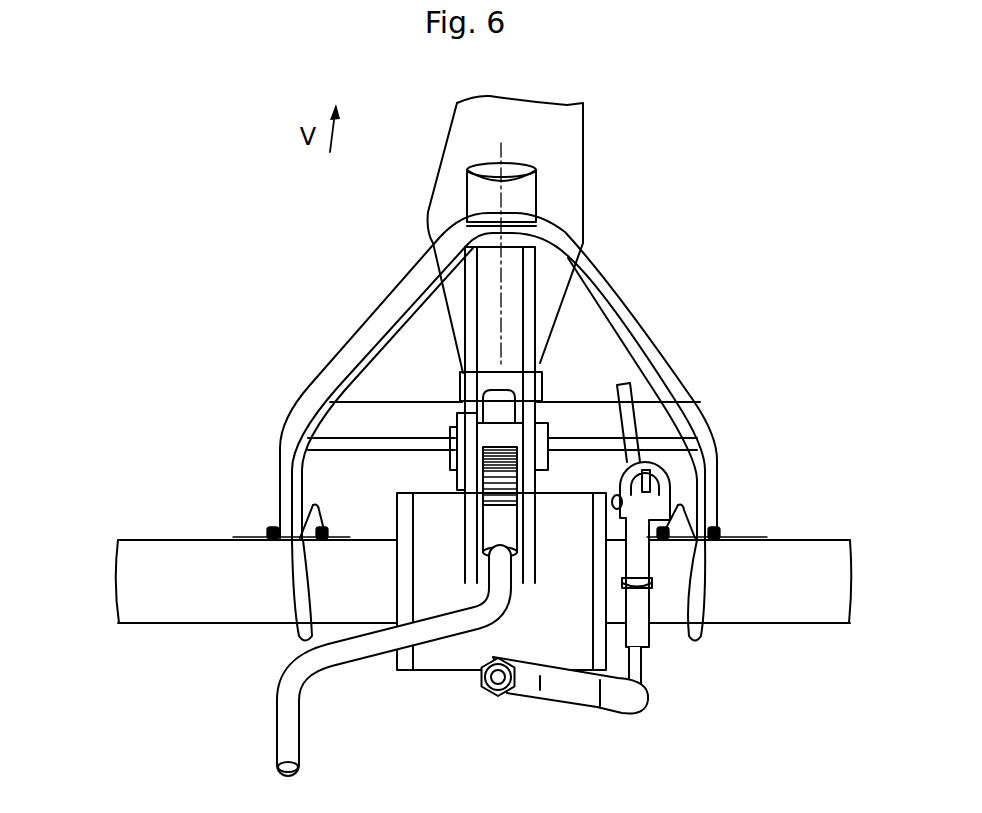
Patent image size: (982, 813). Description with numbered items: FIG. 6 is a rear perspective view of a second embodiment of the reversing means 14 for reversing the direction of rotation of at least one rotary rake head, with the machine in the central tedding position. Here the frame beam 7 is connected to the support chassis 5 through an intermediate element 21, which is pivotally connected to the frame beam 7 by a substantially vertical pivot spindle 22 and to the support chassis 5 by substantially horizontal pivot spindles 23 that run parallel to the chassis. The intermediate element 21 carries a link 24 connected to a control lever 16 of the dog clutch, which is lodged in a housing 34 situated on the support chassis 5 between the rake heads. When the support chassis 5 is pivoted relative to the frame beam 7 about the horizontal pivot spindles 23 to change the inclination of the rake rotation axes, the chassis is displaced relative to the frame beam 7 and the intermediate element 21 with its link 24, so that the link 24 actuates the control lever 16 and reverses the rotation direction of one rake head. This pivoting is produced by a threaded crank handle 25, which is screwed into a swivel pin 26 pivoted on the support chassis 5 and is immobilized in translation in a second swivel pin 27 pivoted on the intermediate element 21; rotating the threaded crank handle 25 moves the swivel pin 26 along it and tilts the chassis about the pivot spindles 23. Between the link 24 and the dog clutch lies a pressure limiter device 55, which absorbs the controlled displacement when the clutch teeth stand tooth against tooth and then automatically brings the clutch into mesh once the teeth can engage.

The support chassis 5 is at (172, 604).
The frame beam 7 is at (568, 146).
The reversing means 14 is at (692, 318).
The control lever 16 is at (582, 693).
The intermediate element 21 is at (407, 292).
The vertical pivot spindle 22 is at (487, 168).
The horizontal pivot spindles 23 is at (277, 530).
The link 24 is at (633, 455).
The threaded crank handle 25 is at (288, 710).
The swivel pin 26 is at (478, 447).
The second swivel pin 27 is at (487, 386).
The housing 34 is at (433, 660).
The pressure limiter device 55 is at (699, 544).